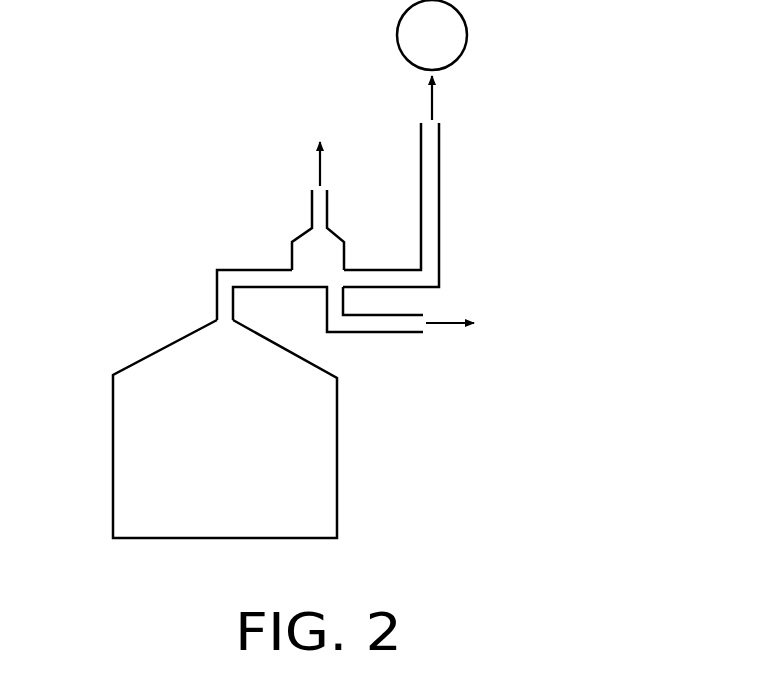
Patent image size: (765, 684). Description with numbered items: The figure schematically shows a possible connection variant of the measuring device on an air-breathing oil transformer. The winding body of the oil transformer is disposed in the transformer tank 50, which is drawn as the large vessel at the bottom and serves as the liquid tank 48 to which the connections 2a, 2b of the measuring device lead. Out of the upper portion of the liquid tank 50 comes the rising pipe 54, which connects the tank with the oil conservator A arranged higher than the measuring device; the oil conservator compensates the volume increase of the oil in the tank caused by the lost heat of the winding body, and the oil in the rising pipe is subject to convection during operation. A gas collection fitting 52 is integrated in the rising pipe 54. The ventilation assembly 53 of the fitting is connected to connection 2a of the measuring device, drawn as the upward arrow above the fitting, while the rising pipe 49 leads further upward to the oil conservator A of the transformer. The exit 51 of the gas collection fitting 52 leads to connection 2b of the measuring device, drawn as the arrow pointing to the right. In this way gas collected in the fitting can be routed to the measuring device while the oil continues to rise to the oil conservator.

The liquid tank 48 is at (112, 196).
The rising pipe 49 is at (383, 270).
The transformer tank 50 is at (337, 420).
The exit 51 is at (343, 301).
The gas collection fitting 52 is at (286, 239).
The ventilation assembly 53 is at (330, 198).
The rising pipe 54 is at (217, 283).
The connection 2a is at (322, 144).
The connection 2b is at (469, 327).